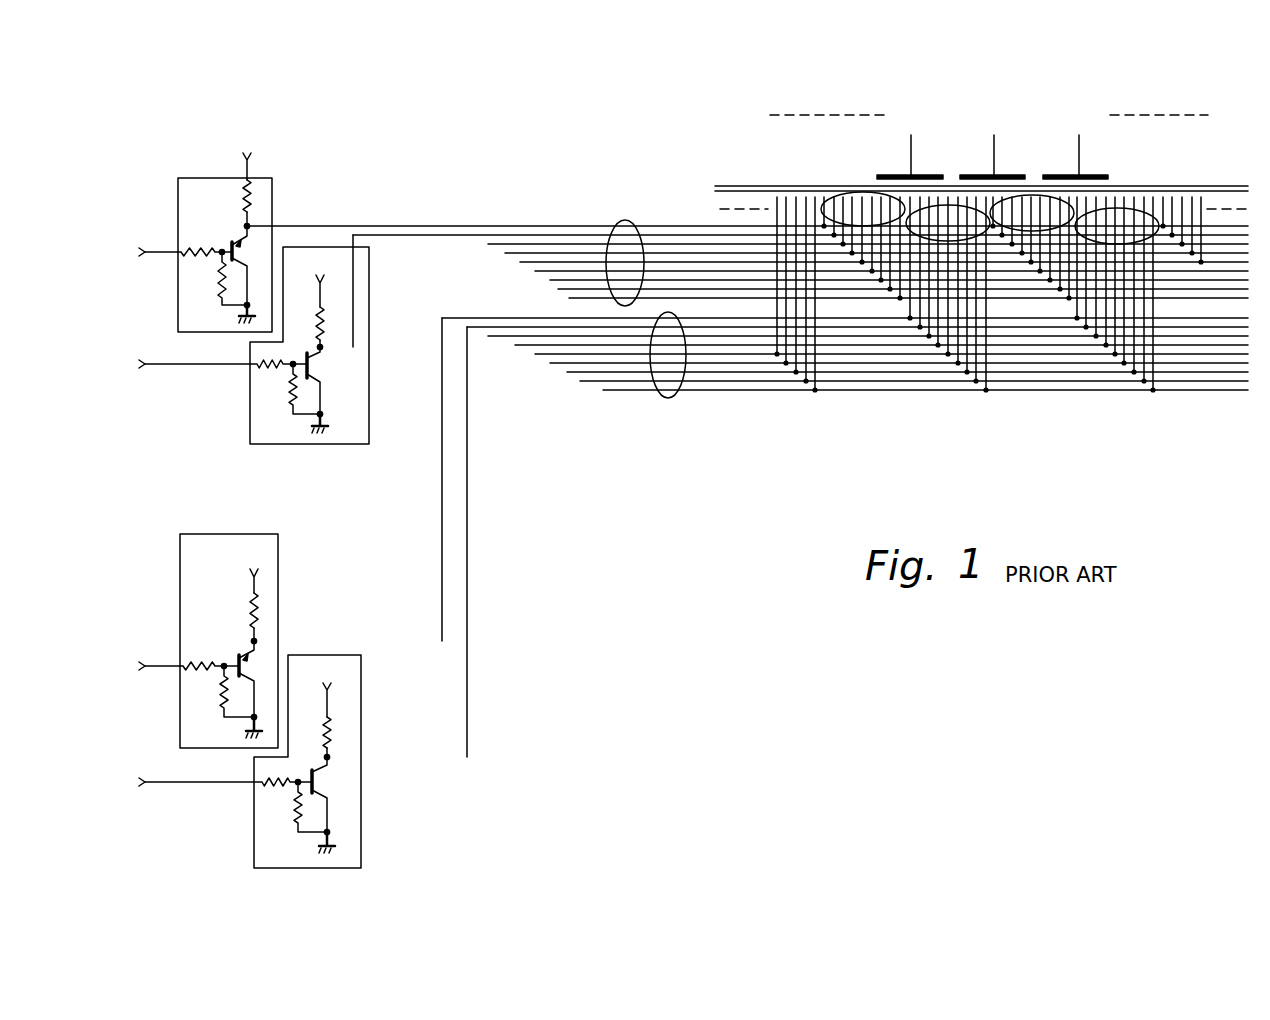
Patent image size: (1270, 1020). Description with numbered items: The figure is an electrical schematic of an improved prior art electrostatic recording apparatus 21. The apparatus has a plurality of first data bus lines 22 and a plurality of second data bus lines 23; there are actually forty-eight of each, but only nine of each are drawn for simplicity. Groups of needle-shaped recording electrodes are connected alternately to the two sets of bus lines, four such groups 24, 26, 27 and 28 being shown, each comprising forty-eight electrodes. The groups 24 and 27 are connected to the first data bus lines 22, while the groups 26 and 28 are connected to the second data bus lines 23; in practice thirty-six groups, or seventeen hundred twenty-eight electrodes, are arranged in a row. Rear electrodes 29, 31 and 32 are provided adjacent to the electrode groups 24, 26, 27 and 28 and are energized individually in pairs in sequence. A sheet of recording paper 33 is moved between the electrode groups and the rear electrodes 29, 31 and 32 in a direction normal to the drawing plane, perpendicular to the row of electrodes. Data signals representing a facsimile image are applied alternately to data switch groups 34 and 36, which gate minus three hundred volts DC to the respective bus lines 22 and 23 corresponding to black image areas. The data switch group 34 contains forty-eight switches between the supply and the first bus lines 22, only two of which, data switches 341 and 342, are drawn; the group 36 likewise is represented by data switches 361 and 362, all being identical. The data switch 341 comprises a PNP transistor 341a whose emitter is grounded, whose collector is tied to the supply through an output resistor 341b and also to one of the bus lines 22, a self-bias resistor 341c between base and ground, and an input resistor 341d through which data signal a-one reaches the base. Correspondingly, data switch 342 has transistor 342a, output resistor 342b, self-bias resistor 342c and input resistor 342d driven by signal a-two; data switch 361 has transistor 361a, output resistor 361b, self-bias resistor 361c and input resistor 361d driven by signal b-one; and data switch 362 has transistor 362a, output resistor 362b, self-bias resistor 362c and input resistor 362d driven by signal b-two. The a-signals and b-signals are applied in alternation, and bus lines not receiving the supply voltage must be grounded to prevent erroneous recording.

The electrostatic recording apparatus 21 is at (531, 142).
The first data bus lines 22 is at (625, 220).
The second data bus lines 23 is at (664, 398).
The recording electrode group 24 is at (842, 194).
The recording electrode group 26 is at (950, 205).
The recording electrode group 27 is at (1032, 196).
The recording electrode group 28 is at (1140, 208).
The rear electrode 29 is at (890, 175).
The rear electrode 31 is at (974, 175).
The rear electrode 32 is at (1058, 175).
The recording paper 33 is at (733, 184).
The data switch group 34 is at (174, 146).
The data switch 341 is at (272, 176).
The PNP transistor 341a is at (238, 240).
The output resistor 341b is at (253, 206).
The self-bias resistor 341c is at (215, 285).
The input resistor 341d is at (190, 256).
The data switch 342 is at (370, 266).
The PNP transistor 342a is at (324, 370).
The output resistor 342b is at (326, 320).
The self-bias resistor 342c is at (285, 396).
The input resistor 342d is at (264, 372).
The data switch group 36 is at (177, 514).
The data switch 361 is at (280, 551).
The PNP transistor 361a is at (250, 672).
The output resistor 361b is at (259, 606).
The self-bias resistor 361c is at (218, 700).
The input resistor 361d is at (198, 655).
The data switch 362 is at (365, 672).
The PNP transistor 362a is at (328, 780).
The output resistor 362b is at (332, 730).
The self-bias resistor 362c is at (288, 814).
The input resistor 362d is at (268, 788).